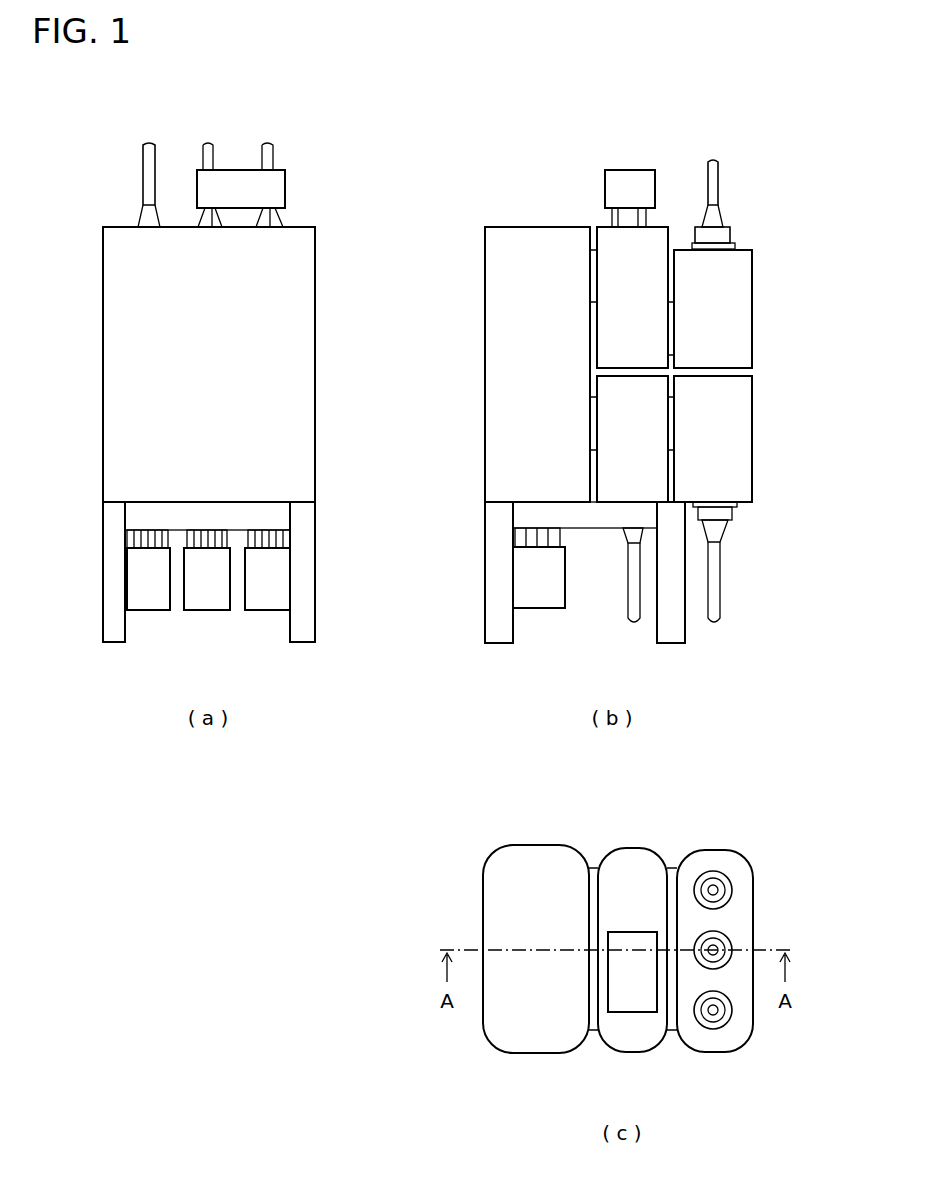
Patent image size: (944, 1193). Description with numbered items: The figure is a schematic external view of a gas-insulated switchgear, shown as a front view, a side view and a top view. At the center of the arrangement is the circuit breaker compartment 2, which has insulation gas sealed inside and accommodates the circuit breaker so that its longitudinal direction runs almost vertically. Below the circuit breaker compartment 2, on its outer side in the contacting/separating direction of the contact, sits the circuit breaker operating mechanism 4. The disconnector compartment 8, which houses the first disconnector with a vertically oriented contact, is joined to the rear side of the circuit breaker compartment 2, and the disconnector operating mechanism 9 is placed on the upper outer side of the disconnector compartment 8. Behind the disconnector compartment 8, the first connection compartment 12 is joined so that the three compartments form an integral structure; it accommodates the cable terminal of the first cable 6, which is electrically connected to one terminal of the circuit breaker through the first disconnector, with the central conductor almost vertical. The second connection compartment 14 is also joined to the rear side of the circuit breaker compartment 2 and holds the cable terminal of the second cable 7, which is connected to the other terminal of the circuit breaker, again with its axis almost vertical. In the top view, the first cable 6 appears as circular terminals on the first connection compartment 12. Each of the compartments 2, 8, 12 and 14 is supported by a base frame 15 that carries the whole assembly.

The circuit breaker compartment 2 is at (315, 312).
The circuit breaker operating mechanism 4 is at (277, 570).
The first cable 6 is at (143, 177).
The second cable 7 is at (627, 568).
The disconnector compartment 8 is at (658, 227).
The disconnector operating mechanism 9 is at (285, 190).
The first connection compartment 12 is at (752, 295).
The second connection compartment 14 is at (648, 413).
The base frame 15 is at (315, 595).